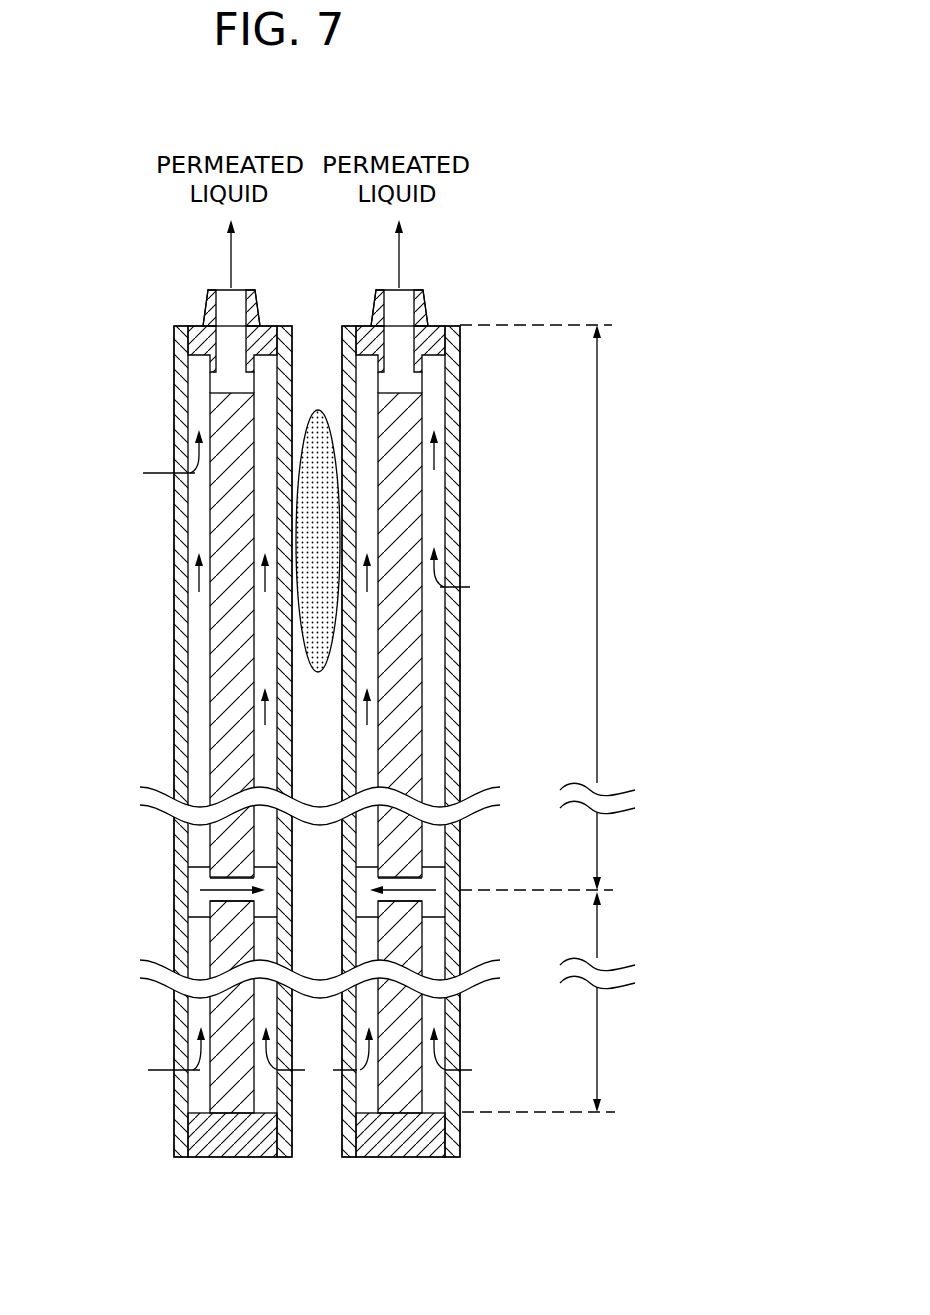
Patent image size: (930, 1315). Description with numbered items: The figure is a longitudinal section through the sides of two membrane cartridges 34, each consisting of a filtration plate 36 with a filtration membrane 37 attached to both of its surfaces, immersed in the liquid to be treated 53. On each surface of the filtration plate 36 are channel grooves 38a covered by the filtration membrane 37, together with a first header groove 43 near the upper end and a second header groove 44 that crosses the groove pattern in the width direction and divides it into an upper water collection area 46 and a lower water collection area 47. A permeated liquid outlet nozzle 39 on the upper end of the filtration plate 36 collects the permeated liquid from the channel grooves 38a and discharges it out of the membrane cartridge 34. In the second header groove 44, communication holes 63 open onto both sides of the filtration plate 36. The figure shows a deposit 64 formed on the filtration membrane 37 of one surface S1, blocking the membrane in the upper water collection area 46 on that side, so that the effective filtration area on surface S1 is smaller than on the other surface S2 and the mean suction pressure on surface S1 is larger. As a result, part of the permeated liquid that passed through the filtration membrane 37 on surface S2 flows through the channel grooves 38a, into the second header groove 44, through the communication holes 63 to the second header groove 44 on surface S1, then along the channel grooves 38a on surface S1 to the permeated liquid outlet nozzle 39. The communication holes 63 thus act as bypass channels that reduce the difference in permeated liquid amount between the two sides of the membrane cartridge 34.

The membrane cartridge 34 is at (230, 1168).
The filtration plate 36 is at (260, 1157).
The filtration membrane 37 is at (180, 642).
The channel groove 38a is at (200, 627).
The permeated liquid outlet nozzle 39 is at (210, 315).
The first header groove 43 is at (176, 390).
The second header groove 44 is at (197, 903).
The upper water collection area 46 is at (550, 607).
The lower water collection area 47 is at (553, 1002).
The liquid to be treated 53 is at (158, 487).
The communication hole 63 is at (228, 866).
The deposit 64 is at (322, 540).
The one surface S1 is at (298, 963).
The other surface S2 is at (166, 771).